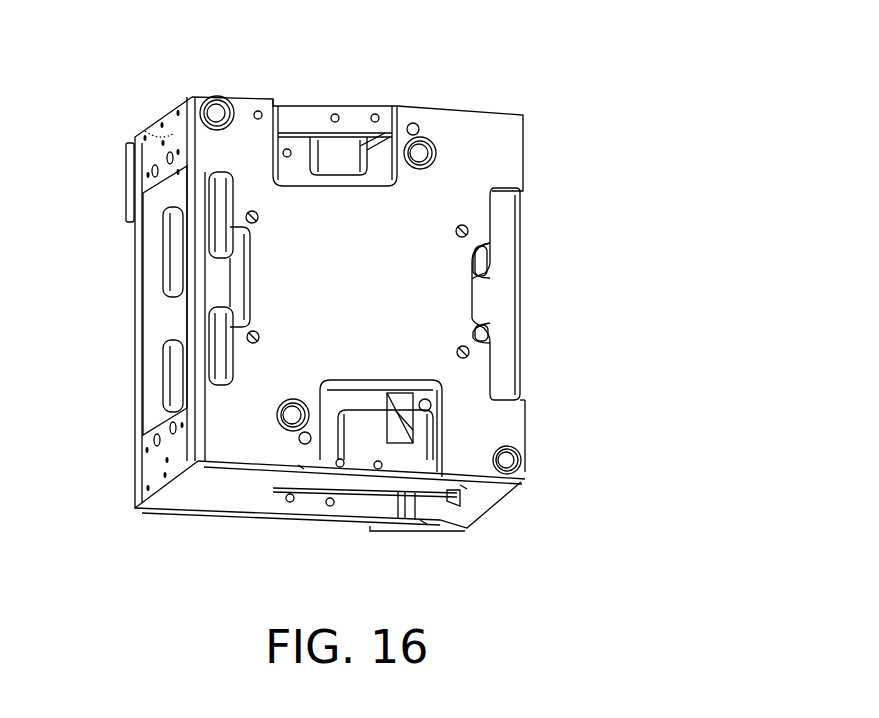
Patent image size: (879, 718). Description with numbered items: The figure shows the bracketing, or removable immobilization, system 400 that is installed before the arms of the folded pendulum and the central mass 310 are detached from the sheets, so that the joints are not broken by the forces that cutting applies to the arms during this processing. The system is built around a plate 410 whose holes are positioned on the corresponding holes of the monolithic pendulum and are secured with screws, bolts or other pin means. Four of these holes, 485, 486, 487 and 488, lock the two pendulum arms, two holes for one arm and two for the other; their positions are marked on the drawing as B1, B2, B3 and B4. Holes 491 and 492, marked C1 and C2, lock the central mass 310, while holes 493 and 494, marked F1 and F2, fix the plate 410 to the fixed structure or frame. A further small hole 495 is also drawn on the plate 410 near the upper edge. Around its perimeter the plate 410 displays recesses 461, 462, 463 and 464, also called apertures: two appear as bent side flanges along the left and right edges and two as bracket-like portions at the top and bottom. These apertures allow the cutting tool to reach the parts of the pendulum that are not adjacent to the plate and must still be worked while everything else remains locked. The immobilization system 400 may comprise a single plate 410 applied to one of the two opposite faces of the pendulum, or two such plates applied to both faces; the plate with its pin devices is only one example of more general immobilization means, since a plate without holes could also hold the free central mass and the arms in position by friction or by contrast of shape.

The central mass 310 is at (143, 128).
The bracketing system 400 is at (205, 440).
The plate 410 is at (373, 284).
The recess 461 is at (235, 287).
The recess 462 is at (482, 302).
The recess 463 is at (294, 168).
The recess 464 is at (403, 397).
The hole 485 is at (247, 212).
The hole 486 is at (253, 346).
The hole 487 is at (470, 226).
The hole 488 is at (472, 352).
The hole 491 is at (428, 133).
The hole 492 is at (288, 428).
The hole 493 is at (522, 460).
The hole 494 is at (217, 100).
The positioning hole 495 is at (260, 112).
The bolt B1 is at (268, 218).
The bolt B2 is at (269, 338).
The bolt B3 is at (448, 233).
The bolt B4 is at (448, 353).
The fastening point C1 is at (278, 424).
The fastening point C2 is at (441, 146).
The fastening point F1 is at (219, 129).
The fastening point F2 is at (490, 455).